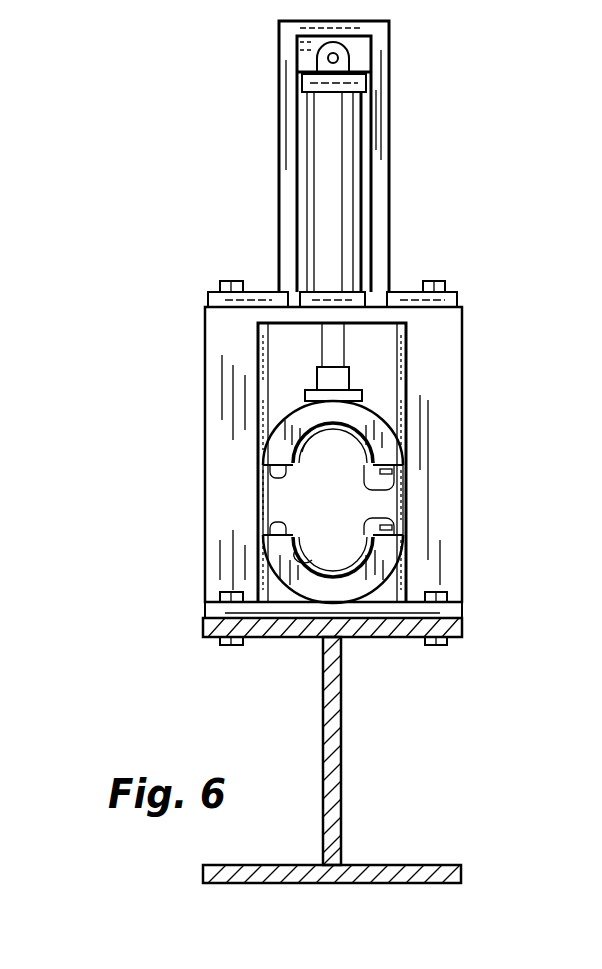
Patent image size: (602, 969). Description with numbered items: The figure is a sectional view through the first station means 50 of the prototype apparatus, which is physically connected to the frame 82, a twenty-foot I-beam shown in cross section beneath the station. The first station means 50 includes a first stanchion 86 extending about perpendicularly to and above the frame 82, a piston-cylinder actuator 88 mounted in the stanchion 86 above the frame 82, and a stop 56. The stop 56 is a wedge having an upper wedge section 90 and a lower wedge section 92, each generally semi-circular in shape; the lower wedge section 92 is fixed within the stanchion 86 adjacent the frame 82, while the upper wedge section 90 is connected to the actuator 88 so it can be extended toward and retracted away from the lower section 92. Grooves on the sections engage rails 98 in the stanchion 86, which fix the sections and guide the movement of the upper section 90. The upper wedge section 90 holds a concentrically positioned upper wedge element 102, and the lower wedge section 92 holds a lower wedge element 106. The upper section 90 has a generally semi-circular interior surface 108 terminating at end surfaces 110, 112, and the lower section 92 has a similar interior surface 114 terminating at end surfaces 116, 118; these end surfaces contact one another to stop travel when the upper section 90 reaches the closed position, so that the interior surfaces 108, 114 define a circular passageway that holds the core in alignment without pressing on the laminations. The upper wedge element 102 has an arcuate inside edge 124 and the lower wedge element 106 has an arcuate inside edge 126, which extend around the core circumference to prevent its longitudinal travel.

The first station means 50 is at (412, 145).
The stop 56 is at (411, 497).
The frame 82 is at (332, 782).
The first stanchion 86 is at (440, 318).
The piston-cylinder actuator 88 is at (325, 203).
The upper wedge section 90 is at (385, 440).
The lower wedge section 92 is at (387, 547).
The rails 98 is at (260, 348).
The upper wedge element 102 is at (310, 430).
The lower wedge element 106 is at (303, 565).
The interior surface 108 is at (400, 484).
The end surface 110 is at (268, 477).
The end surface 112 is at (403, 470).
The interior surface 114 is at (395, 521).
The end surface 116 is at (275, 522).
The end surface 118 is at (403, 528).
The arcuate inside edge 124 is at (338, 430).
The arcuate inside edge 126 is at (360, 555).